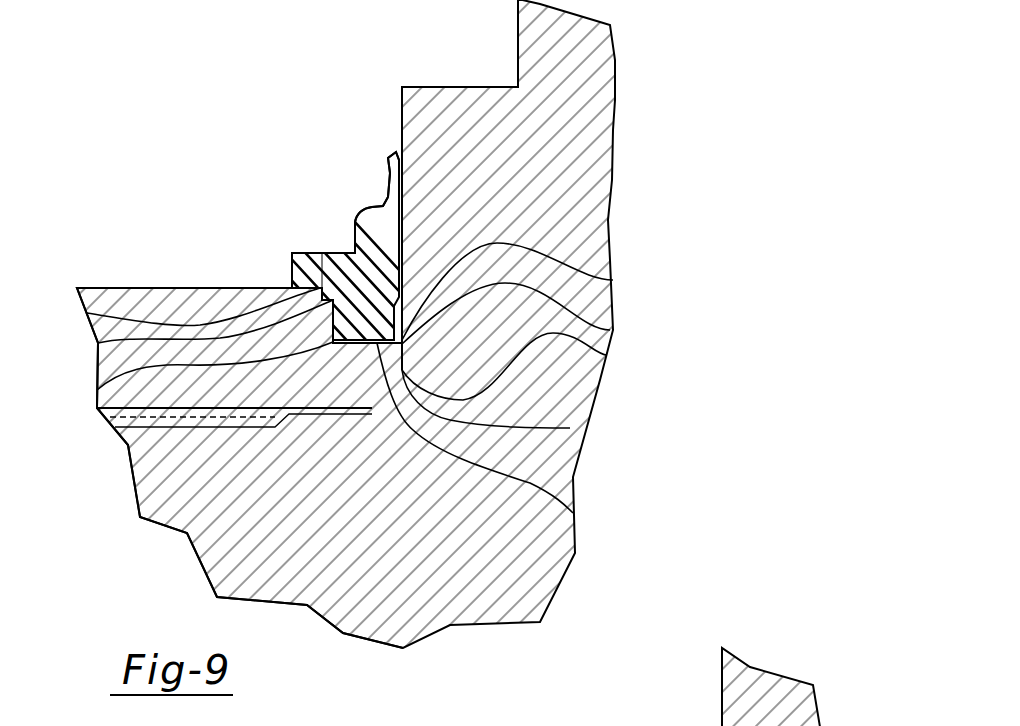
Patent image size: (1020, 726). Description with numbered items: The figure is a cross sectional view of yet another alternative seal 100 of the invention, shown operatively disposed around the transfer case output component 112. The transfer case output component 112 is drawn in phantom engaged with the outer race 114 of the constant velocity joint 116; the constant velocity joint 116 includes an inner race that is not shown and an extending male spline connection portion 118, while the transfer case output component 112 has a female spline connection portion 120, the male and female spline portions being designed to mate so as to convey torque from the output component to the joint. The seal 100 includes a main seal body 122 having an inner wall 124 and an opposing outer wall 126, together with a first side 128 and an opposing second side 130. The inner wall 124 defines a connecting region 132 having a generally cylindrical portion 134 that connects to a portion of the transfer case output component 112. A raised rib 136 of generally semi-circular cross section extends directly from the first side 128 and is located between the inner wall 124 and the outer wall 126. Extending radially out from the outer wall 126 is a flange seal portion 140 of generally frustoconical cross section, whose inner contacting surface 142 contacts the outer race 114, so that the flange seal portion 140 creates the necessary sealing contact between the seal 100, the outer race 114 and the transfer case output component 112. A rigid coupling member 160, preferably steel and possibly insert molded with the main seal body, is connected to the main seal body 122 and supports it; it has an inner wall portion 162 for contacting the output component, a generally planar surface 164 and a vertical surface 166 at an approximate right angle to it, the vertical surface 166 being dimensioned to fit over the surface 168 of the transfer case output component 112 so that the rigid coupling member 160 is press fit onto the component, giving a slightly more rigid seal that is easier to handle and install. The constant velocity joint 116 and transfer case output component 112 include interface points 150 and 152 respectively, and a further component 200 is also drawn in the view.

The seal 100 is at (357, 205).
The transfer case output component 112 is at (177, 300).
The outer race 114 is at (438, 113).
The constant velocity joint 116 is at (587, 48).
The male spline connection portion 118 is at (150, 417).
The female spline connection portion 120 is at (125, 447).
The main seal body 122 is at (335, 260).
The inner wall 124 is at (370, 343).
The outer wall 126 is at (345, 262).
The first side 128 is at (362, 207).
The second side 130 is at (290, 255).
The connecting region 132 is at (570, 428).
The generally cylindrical portion 134 is at (573, 513).
The raised rib 136 is at (613, 280).
The flange seal portion 140 is at (393, 200).
The inner contacting surface 142 is at (403, 193).
The interface point 150 is at (607, 355).
The interface point 152 is at (610, 330).
The rigid coupling member 160 is at (290, 277).
The inner wall portion 162 is at (96, 343).
The planar surface 164 is at (97, 390).
The vertical surface 166 is at (92, 313).
The surface 168 is at (100, 288).
The adjacent component 200 is at (615, 725).